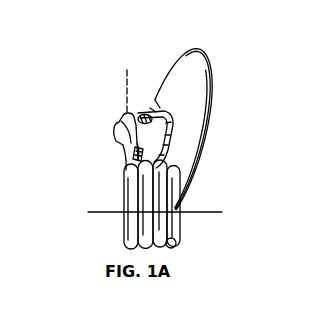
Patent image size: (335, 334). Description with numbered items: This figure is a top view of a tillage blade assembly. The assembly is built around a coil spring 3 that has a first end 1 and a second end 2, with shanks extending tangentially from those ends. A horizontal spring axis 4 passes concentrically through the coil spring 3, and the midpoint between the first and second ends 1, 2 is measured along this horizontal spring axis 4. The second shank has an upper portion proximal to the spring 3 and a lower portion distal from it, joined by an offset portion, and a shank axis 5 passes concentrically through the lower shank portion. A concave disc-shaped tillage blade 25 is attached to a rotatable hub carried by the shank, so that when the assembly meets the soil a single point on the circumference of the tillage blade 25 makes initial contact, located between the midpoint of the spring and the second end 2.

The first end 1 is at (165, 188).
The second end 2 is at (113, 233).
The coil spring 3 is at (160, 210).
The horizontal spring axis 4 is at (98, 212).
The shank axis 5 is at (125, 78).
The tillage blade 25 is at (203, 63).